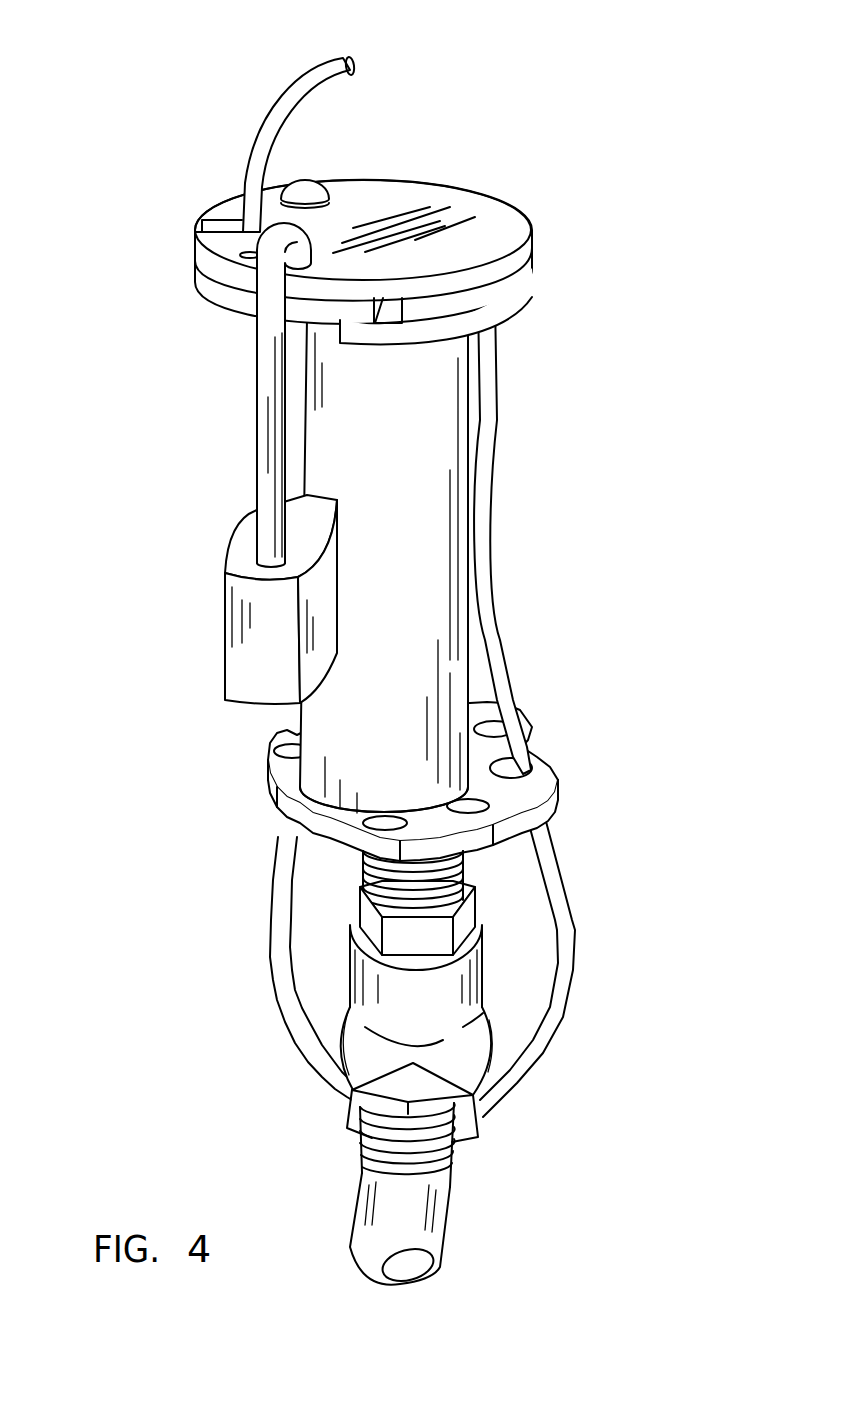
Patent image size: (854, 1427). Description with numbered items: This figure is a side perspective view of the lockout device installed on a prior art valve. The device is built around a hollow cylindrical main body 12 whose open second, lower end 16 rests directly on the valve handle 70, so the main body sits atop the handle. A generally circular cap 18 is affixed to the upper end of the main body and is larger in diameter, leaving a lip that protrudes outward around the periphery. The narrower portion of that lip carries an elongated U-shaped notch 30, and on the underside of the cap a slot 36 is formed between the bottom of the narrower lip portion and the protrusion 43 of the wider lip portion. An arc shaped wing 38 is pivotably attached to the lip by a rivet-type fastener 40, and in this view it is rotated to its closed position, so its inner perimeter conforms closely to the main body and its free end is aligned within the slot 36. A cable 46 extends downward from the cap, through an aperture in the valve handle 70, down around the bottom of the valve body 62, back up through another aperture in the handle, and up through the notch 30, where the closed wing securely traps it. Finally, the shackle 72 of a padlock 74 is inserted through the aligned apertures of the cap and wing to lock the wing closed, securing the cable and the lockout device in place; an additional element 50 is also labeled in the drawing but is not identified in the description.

The main body 12 is at (420, 440).
The second, lower end 16 is at (337, 813).
The circular cap 18 is at (396, 228).
The U-shaped notch 30 is at (217, 223).
The slot 36 is at (390, 310).
The arc shaped wing 38 is at (215, 283).
The fastener 40 is at (307, 187).
The protrusion 43 is at (357, 338).
The cable 46 is at (490, 642).
The cable 50 is at (355, 62).
The valve body 62 is at (487, 1045).
The valve handle 70 is at (538, 772).
The shackle 72 is at (268, 348).
The padlock 74 is at (243, 613).